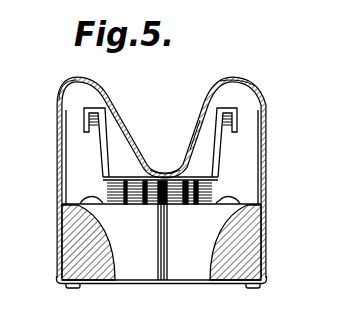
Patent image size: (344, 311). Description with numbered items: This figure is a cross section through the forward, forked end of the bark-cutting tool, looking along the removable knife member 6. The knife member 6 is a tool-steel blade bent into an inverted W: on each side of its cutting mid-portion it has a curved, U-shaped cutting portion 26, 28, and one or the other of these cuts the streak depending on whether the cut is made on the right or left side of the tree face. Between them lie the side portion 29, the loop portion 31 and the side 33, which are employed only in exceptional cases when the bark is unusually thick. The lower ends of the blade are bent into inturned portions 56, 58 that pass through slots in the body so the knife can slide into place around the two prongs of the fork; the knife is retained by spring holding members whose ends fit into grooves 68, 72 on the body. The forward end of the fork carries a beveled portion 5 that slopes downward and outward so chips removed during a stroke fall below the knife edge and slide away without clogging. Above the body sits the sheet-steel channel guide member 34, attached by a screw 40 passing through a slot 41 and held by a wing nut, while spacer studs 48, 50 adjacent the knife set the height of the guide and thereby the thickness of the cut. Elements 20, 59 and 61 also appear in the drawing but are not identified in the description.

The beveled portion 5 is at (143, 263).
The knife member 6 is at (136, 138).
The bottom plate 20 is at (155, 298).
The curved cutting portion 26 is at (72, 80).
The curved cutting portion 28 is at (245, 80).
The side portion 29 is at (194, 130).
The loop portion 31 is at (165, 168).
The side 33 is at (121, 106).
The guide member 34 is at (236, 103).
The screw 40 is at (168, 204).
The slot 41 is at (183, 168).
The spacer stud 48 is at (211, 188).
The spacer stud 50 is at (127, 203).
The inturned portion 56 is at (257, 286).
The inturned portion 58 is at (71, 286).
The left filler block 59 is at (70, 248).
The right filler block 61 is at (252, 248).
The groove 68 is at (240, 196).
The groove 72 is at (101, 196).